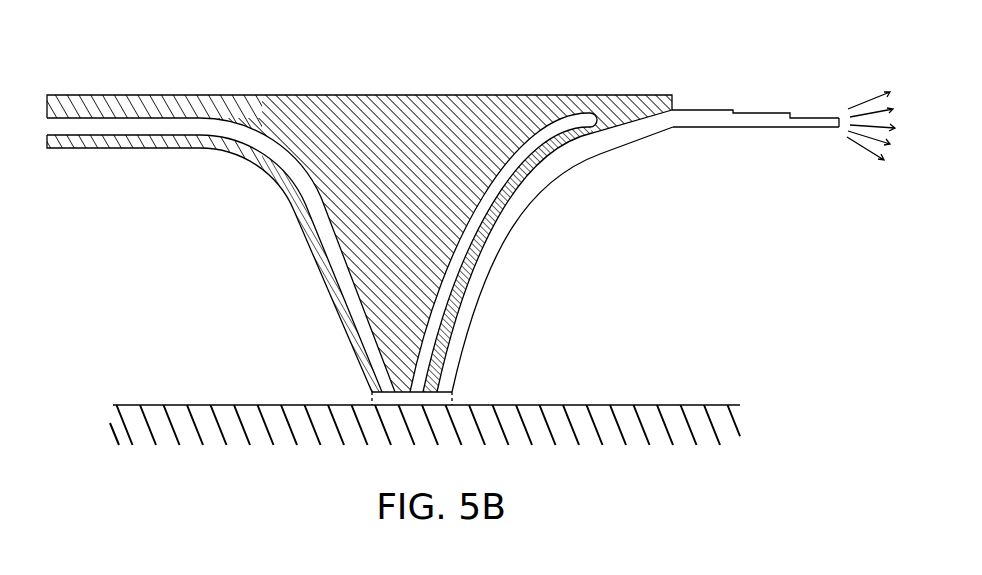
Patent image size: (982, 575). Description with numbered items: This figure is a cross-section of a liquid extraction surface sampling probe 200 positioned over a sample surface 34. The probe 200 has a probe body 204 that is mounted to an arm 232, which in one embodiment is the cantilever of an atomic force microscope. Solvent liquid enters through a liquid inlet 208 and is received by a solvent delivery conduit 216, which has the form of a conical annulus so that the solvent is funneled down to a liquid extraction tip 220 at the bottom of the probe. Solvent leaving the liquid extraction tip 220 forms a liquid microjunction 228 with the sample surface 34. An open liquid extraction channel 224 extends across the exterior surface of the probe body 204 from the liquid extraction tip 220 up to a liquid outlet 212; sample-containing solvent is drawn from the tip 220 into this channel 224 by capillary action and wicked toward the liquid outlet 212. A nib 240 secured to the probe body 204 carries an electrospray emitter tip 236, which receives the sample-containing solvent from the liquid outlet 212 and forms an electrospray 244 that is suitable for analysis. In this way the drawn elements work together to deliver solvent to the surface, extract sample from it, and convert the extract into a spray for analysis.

The liquid extraction surface sampling probe 200 is at (452, 210).
The arm 232 is at (103, 95).
The liquid inlet 208 is at (47, 127).
The probe body 204 is at (312, 225).
The solvent delivery conduit 216 is at (348, 262).
The open liquid extraction channel 224 is at (532, 193).
The liquid outlet 212 is at (630, 137).
The nib 240 is at (760, 110).
The electrospray emitter tip 236 is at (838, 128).
The electrospray 244 is at (870, 102).
The liquid extraction tip 220 is at (372, 392).
The liquid microjunction 228 is at (452, 392).
The sample surface 34 is at (686, 405).